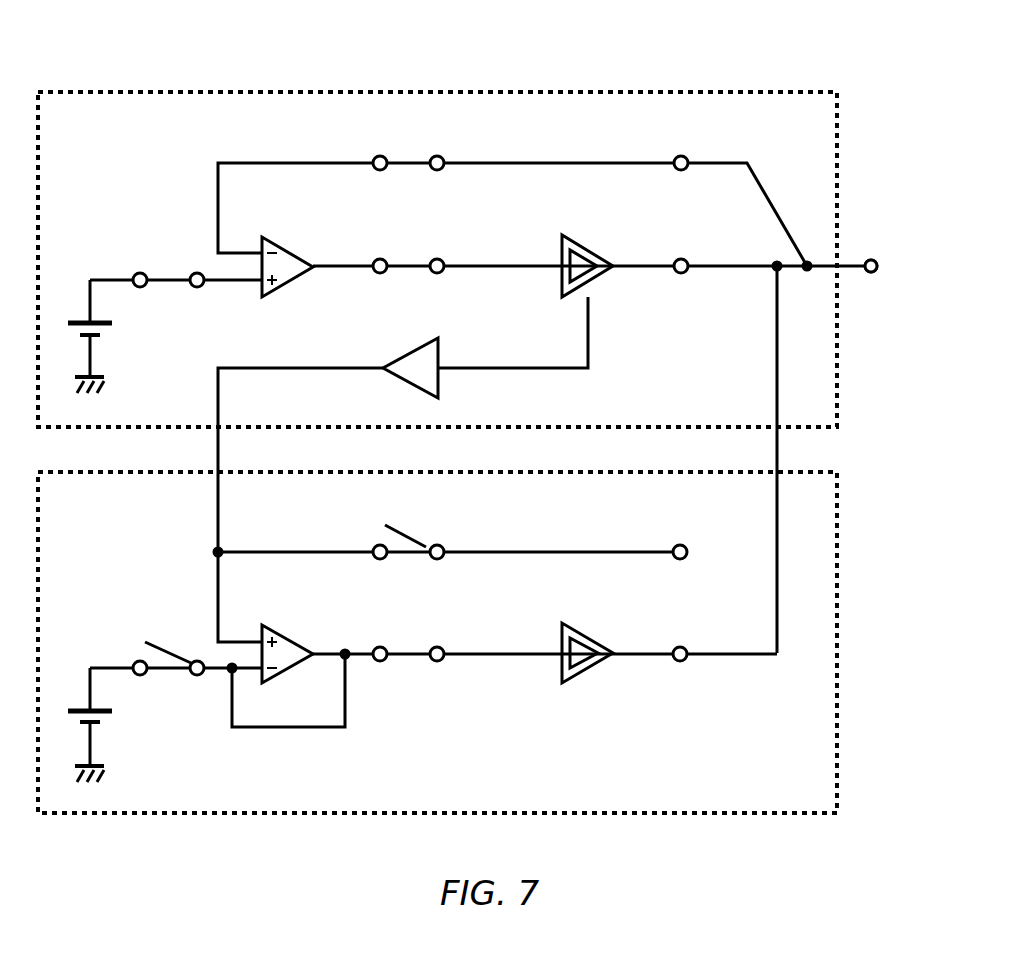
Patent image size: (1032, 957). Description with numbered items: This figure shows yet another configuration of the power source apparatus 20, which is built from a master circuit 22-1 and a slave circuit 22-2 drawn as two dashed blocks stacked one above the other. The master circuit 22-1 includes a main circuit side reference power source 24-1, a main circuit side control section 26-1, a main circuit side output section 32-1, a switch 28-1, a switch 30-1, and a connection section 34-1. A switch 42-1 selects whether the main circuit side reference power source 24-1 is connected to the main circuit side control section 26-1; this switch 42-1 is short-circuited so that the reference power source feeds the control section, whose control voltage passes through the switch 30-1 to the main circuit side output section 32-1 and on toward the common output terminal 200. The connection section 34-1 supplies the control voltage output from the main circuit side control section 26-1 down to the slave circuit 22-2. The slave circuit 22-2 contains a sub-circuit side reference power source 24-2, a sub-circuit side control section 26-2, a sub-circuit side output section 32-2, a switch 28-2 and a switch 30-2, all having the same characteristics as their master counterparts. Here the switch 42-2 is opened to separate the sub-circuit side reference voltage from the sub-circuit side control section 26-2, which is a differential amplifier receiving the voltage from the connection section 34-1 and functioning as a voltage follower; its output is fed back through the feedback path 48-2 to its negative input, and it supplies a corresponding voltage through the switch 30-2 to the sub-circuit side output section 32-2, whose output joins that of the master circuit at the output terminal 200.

The power source apparatus 20 is at (832, 32).
The master circuit 22-1 is at (838, 365).
The slave circuit 22-2 is at (838, 754).
The main circuit side reference power source 24-1 is at (108, 320).
The sub-circuit side reference power source 24-2 is at (108, 708).
The main circuit side control section 26-1 is at (313, 226).
The sub-circuit side control section 26-2 is at (313, 616).
The switch 28-1 is at (462, 135).
The switch 28-2 is at (372, 540).
The switch 30-1 is at (462, 237).
The switch 30-2 is at (462, 625).
The main circuit side output section 32-1 is at (612, 228).
The sub-circuit side output section 32-2 is at (612, 618).
The connection section 34-1 is at (410, 352).
The switch 42-1 is at (134, 274).
The switch 42-2 is at (134, 662).
The feedback line 48-2 is at (289, 730).
The output terminal 200 is at (898, 266).